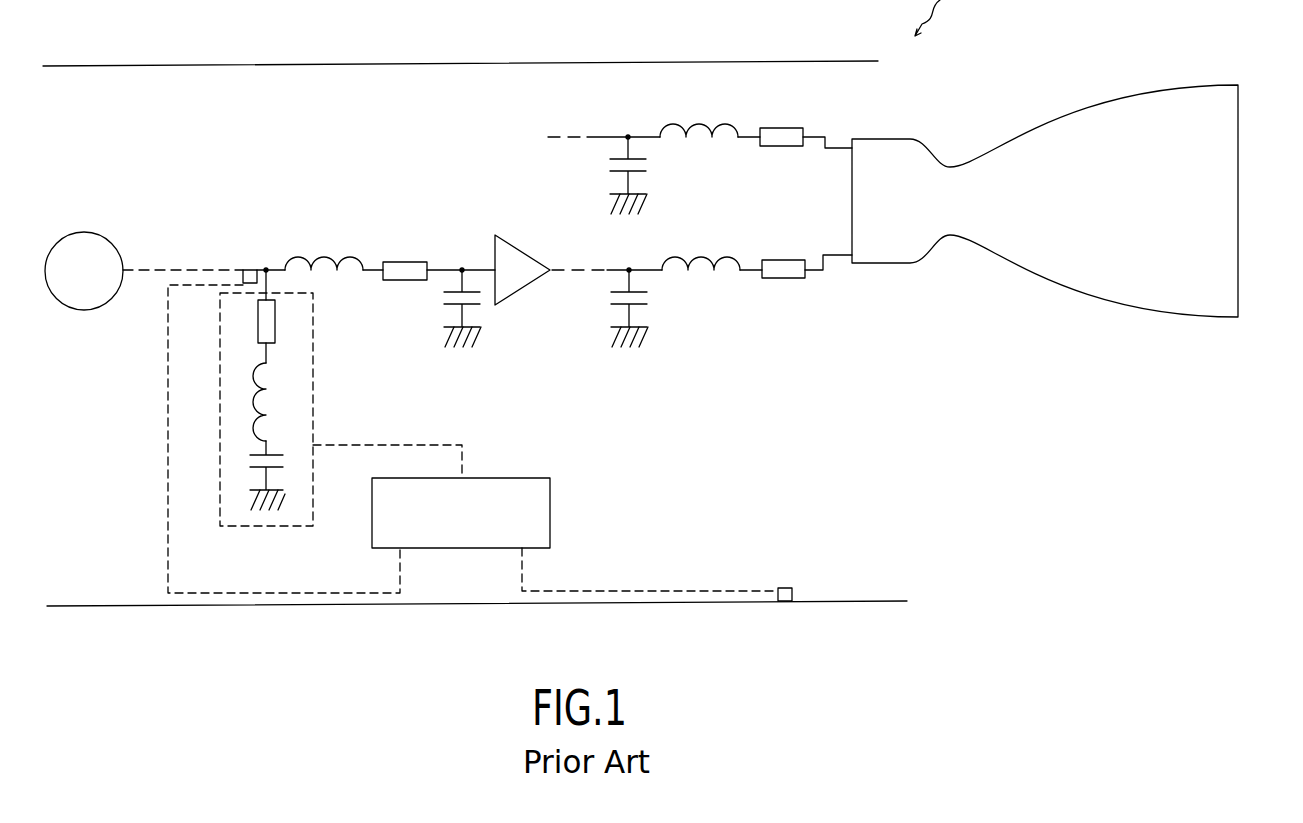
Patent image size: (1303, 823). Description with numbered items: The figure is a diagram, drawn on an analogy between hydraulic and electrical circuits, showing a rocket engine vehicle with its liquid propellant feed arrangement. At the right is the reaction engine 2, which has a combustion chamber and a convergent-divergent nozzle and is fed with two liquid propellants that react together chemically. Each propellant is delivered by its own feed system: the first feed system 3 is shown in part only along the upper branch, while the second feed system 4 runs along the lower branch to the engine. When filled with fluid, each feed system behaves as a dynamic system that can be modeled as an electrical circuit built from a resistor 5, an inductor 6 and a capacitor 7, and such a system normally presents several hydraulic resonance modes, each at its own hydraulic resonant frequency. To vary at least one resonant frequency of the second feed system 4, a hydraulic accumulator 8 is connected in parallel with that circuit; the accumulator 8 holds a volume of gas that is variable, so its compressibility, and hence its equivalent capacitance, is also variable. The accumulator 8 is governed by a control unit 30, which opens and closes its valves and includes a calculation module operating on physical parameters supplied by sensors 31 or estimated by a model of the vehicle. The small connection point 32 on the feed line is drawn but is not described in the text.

The reaction engine 2 is at (1093, 207).
The first feed system 3 is at (611, 137).
The second feed system 4 is at (611, 269).
The resistor 5 is at (786, 279).
The inductor 6 is at (688, 267).
The capacitor 7 is at (611, 303).
The hydraulic accumulator 8 is at (288, 377).
The control unit 30 is at (448, 525).
The sensors 31 is at (792, 589).
The terminal (connection point) 32 is at (250, 270).